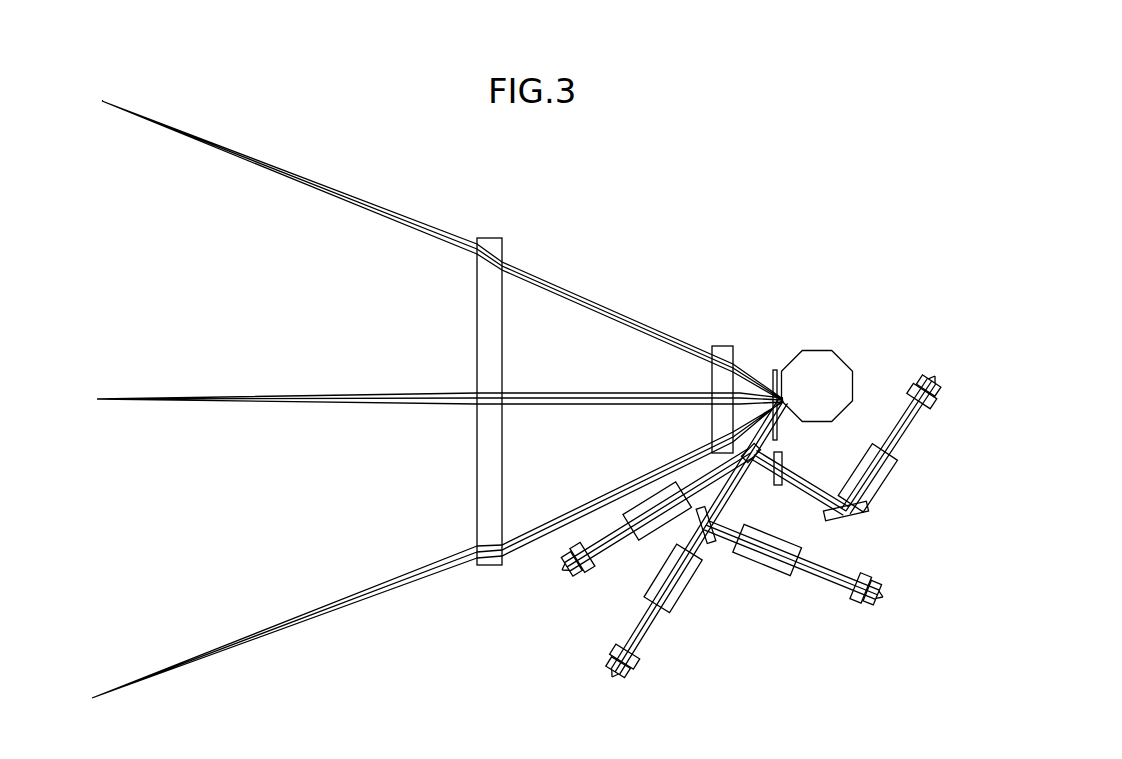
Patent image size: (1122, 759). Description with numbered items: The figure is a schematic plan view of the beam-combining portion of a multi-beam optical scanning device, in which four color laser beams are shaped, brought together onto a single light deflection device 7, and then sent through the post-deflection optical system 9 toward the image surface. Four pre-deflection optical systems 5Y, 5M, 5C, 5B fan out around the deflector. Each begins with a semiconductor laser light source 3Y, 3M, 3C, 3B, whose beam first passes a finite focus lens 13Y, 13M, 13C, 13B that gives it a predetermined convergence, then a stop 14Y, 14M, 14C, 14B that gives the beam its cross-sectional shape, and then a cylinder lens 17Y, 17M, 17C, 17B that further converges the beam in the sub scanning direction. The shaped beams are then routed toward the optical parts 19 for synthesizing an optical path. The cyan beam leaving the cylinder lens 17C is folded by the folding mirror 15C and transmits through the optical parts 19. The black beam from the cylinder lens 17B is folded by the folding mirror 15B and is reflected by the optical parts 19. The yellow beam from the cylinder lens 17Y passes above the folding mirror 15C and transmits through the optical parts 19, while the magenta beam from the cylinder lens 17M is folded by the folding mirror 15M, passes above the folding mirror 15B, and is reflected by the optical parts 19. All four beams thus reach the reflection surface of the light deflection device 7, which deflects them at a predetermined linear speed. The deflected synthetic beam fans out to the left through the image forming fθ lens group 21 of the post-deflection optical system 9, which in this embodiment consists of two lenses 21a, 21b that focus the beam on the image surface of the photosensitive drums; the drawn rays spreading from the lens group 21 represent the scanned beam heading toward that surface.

The post-deflection optical system 9 is at (281, 333).
The image forming lens group 21 is at (688, 230).
The lens 21a is at (503, 250).
The lens 21b is at (727, 346).
The light deflection device 7 is at (818, 352).
The optical parts for synthesizing an optical path 19 is at (782, 452).
The pre-deflection optical system 5M is at (940, 491).
The light source 3M is at (936, 372).
The finite focus lens 13M is at (921, 384).
The stop 14M is at (905, 398).
The cylinder lens 17M is at (882, 484).
The folding mirror 15M is at (840, 517).
The pre-deflection optical system 5Y is at (710, 678).
The light source 3Y is at (611, 681).
The finite focus lens 13Y is at (627, 672).
The stop 14Y is at (614, 650).
The cylinder lens 17Y is at (698, 585).
The pre-deflection optical system 5C is at (803, 637).
The light source 3C is at (886, 599).
The finite focus lens 13C is at (869, 582).
The stop 14C is at (856, 601).
The cylinder lens 17C is at (762, 565).
The folding mirror 15C is at (712, 542).
The pre-deflection optical system 5B is at (650, 453).
The light source 3B is at (560, 572).
The finite focus lens 13B is at (578, 575).
The stop 14B is at (575, 545).
The cylinder lens 17B is at (645, 500).
The folding mirror 15B is at (756, 463).